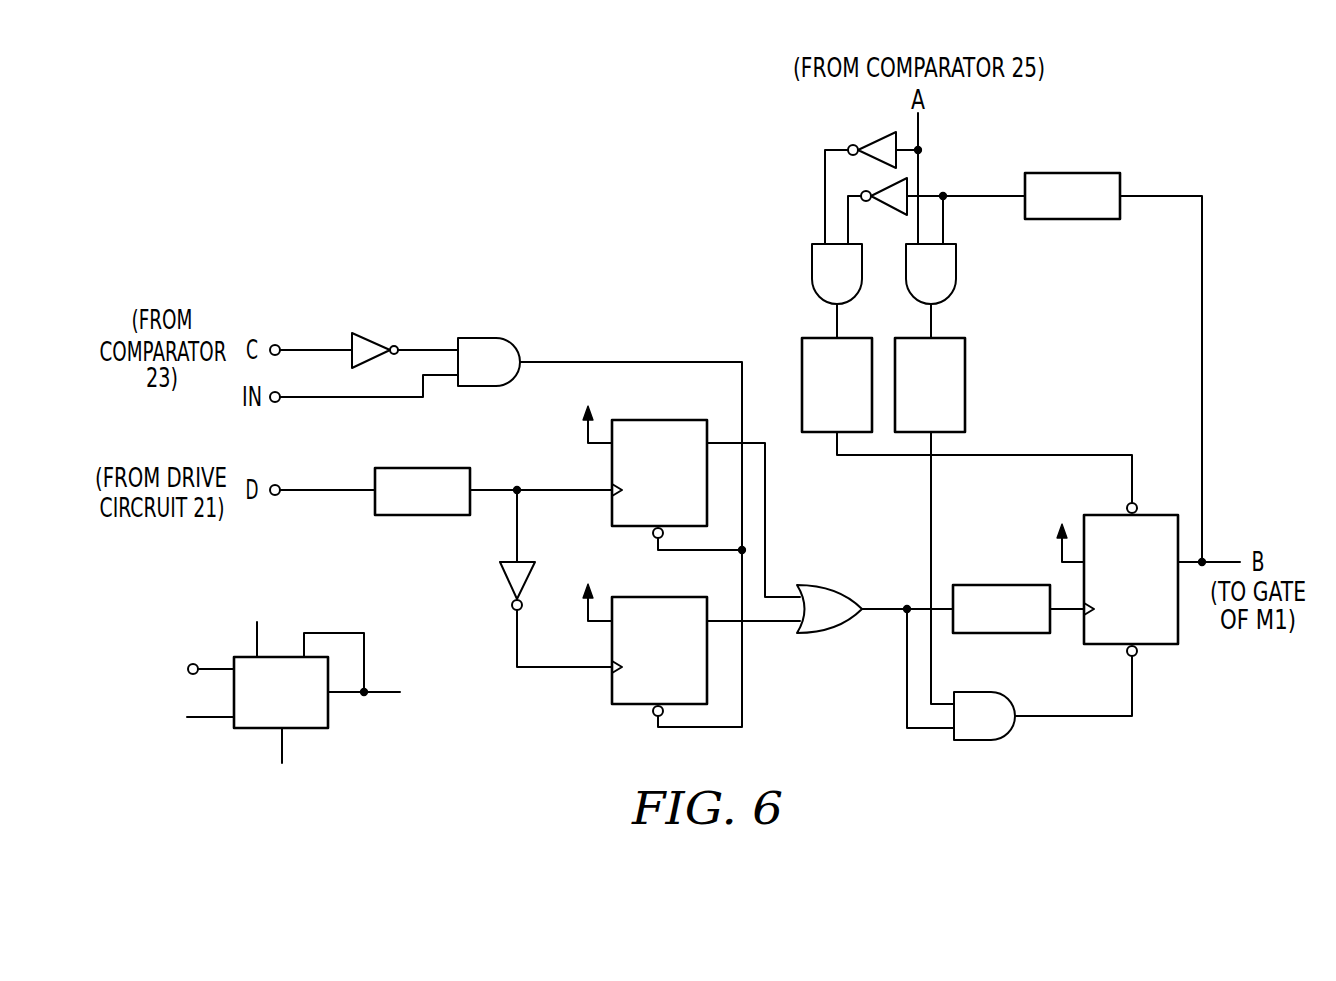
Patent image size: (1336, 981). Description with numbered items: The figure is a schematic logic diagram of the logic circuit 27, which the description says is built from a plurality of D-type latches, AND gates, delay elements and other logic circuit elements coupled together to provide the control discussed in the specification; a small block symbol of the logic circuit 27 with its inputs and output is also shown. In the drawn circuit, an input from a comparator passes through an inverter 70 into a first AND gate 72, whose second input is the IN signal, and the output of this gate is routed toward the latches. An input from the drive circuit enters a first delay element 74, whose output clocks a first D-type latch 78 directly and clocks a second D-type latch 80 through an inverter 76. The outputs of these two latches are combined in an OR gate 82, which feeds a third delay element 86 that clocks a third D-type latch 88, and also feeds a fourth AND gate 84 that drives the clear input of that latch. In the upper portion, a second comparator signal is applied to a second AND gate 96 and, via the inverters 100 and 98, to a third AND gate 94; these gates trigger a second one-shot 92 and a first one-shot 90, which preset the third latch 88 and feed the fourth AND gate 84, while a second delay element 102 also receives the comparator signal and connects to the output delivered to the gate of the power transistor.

The logic circuit 27 is at (330, 712).
The inverter 70 is at (372, 335).
The AND gate A3 72 is at (480, 337).
The delay D1 74 is at (421, 517).
The inverter 76 is at (501, 580).
The D latch DL1 78 is at (696, 419).
The D latch DL2 80 is at (610, 693).
The OR gate 82 is at (814, 642).
The AND gate A4 84 is at (977, 742).
The delay D3 86 is at (978, 584).
The D latch DL3 88 is at (1152, 513).
The one shot #1 90 is at (966, 388).
The one shot #2 92 is at (801, 350).
The AND gate A2 94 is at (811, 251).
The AND gate A1 96 is at (957, 252).
The inverter 98 is at (889, 216).
The inverter 100 is at (880, 133).
The delay D2 102 is at (1108, 172).